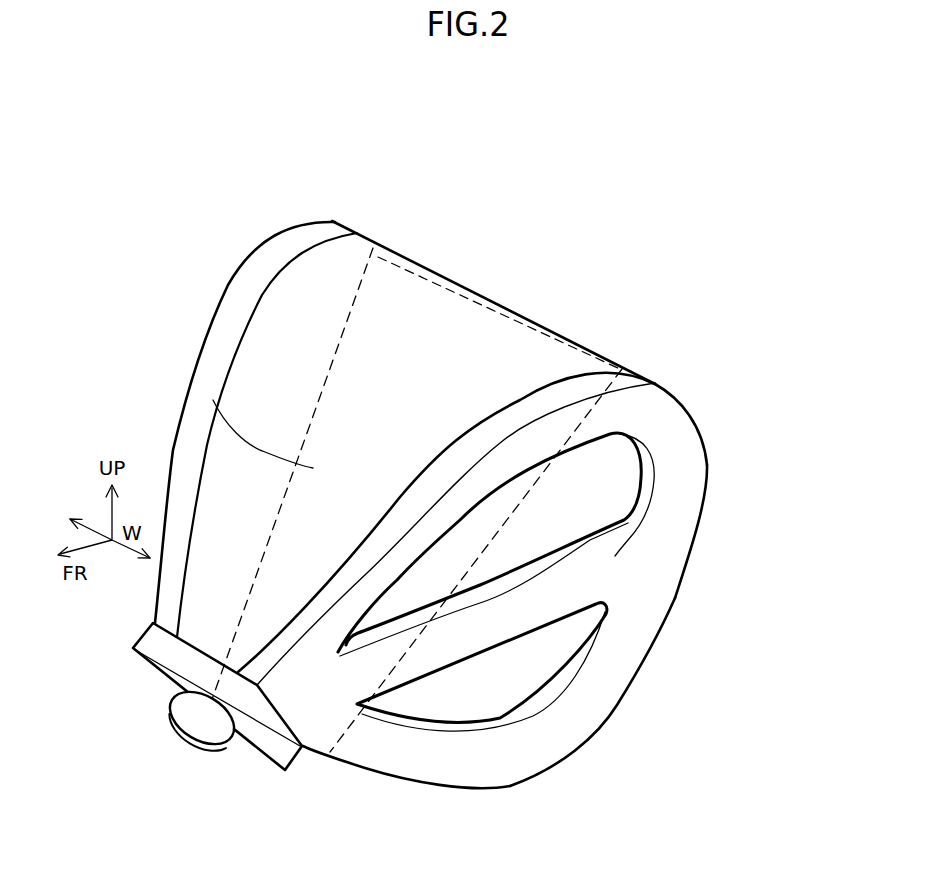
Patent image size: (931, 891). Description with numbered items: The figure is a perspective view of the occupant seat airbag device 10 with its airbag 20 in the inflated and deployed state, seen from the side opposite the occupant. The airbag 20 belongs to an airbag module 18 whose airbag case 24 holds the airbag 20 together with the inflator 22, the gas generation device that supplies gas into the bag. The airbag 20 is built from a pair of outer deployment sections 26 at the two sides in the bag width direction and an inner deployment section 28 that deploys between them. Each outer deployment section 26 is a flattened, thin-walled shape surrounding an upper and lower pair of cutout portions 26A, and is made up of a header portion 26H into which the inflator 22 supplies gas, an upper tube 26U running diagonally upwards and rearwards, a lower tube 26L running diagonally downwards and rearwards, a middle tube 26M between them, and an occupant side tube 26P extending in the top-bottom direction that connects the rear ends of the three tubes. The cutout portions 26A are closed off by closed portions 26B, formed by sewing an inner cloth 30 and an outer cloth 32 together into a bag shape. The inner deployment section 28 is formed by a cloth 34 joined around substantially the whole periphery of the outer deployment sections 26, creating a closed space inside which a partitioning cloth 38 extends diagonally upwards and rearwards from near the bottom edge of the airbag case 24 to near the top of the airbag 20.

The occupant seat airbag device 10 is at (667, 283).
The airbag module 18 is at (250, 768).
The airbag 20 is at (587, 224).
The inflator 22 is at (203, 730).
The airbag case 24 is at (163, 668).
The outer deployment section 26 is at (312, 234).
The cutout portion 26A is at (493, 574).
The closed portion 26B is at (540, 527).
The header portion 26H is at (318, 722).
The lower tube 26L is at (573, 766).
The middle tube 26M is at (582, 580).
The occupant side tube 26P is at (652, 589).
The upper tube 26U is at (493, 473).
The inner deployment section 28 is at (417, 303).
The inner cloth 30 is at (605, 450).
The outer cloth 32 is at (682, 417).
The cloth 34 is at (587, 358).
The partitioning cloth 38 is at (213, 400).